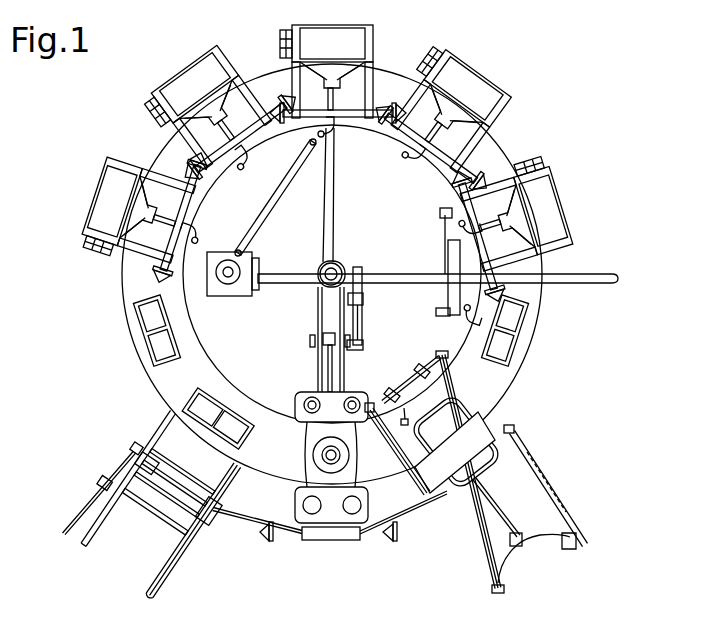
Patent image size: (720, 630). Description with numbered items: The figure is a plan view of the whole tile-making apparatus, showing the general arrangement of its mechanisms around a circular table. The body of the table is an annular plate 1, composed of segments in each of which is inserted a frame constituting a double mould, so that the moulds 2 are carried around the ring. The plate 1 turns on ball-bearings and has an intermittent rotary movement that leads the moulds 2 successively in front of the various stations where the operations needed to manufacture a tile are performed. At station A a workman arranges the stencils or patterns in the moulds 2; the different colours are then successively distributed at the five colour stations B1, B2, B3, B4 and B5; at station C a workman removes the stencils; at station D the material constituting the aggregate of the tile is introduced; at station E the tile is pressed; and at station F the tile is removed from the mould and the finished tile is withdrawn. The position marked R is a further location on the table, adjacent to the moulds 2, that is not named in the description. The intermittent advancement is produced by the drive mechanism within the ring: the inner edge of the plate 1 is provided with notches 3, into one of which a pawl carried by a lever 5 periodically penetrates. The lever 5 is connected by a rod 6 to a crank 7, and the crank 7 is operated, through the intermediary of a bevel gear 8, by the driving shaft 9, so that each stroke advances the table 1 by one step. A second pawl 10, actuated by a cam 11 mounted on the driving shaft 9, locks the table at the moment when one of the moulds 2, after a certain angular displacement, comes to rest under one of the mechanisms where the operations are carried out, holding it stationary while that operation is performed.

The annular plate 1 is at (130, 289).
The moulds 2 is at (150, 309).
The notches 3 is at (243, 150).
The lever 5 is at (335, 203).
The rod 6 is at (272, 203).
The crank 7 is at (231, 261).
The bevel gear 8 is at (244, 298).
The driving shaft 9 is at (300, 272).
The pawl 10 is at (312, 424).
The cam 11 is at (359, 267).
The stencil arrangement station A is at (332, 129).
The first colour distribution station B1 is at (135, 206).
The second colour distribution station B2 is at (218, 105).
The third colour distribution station B3 is at (338, 62).
The fourth colour distribution station B4 is at (454, 116).
The fifth colour distribution station B5 is at (522, 224).
The stencil removal station C is at (495, 352).
The aggregate introduction station D is at (476, 472).
The pressing station E is at (330, 477).
The tile removal station F is at (164, 486).
The station R window R is at (163, 346).